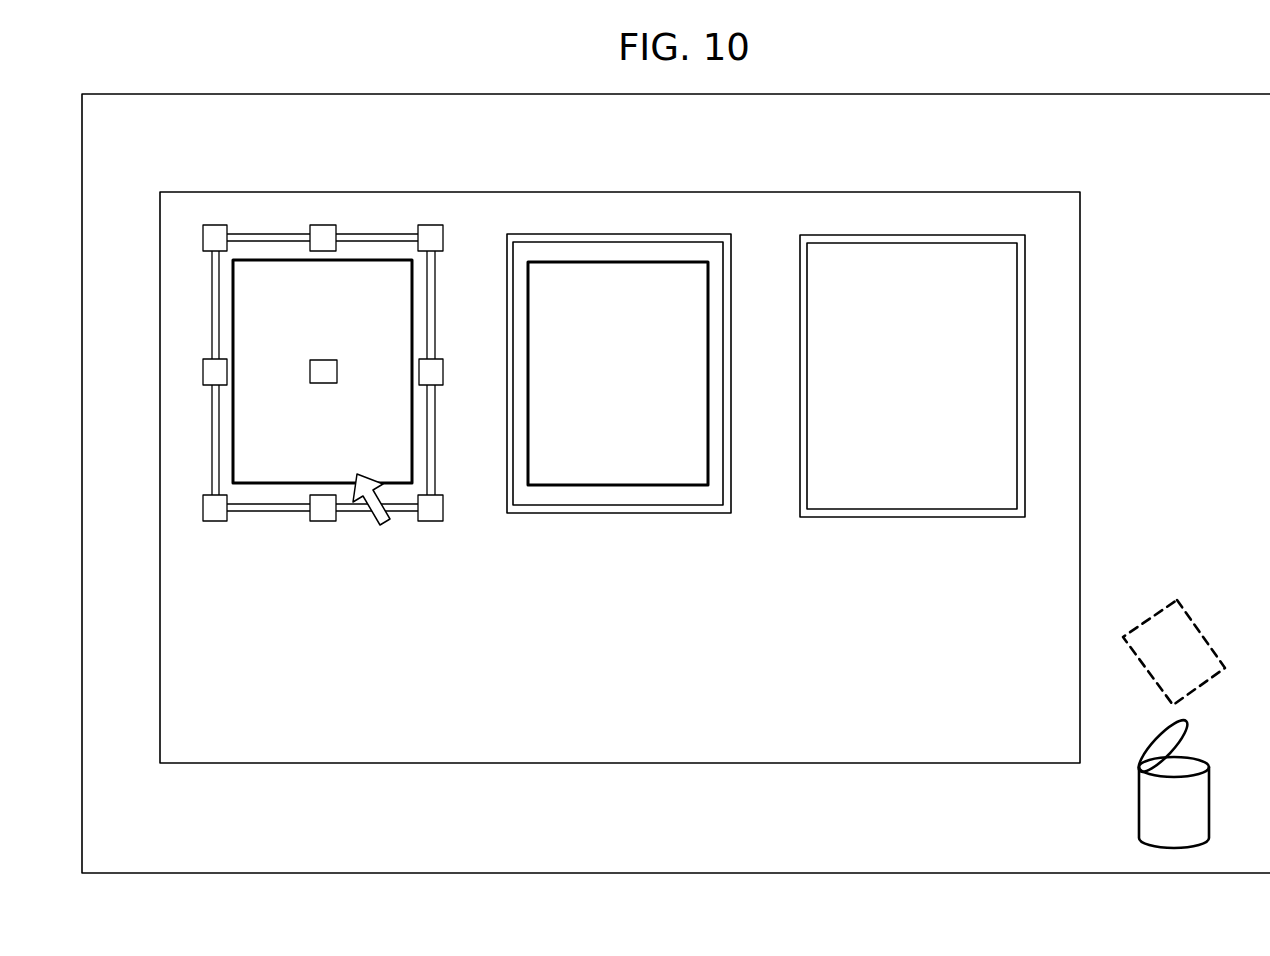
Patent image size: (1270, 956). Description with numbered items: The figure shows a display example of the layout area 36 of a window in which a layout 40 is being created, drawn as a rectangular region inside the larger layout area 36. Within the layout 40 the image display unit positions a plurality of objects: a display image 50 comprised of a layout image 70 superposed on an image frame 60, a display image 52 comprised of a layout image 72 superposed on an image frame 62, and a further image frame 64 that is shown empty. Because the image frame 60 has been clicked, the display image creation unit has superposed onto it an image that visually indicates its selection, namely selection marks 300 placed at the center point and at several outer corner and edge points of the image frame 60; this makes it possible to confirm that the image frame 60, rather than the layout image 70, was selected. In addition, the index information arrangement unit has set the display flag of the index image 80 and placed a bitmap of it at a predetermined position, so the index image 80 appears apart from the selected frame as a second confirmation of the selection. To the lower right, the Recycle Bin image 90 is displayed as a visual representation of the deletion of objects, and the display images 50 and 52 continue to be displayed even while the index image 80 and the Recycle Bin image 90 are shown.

The layout area 36 is at (156, 93).
The layout 40 is at (158, 235).
The display image 50 is at (380, 143).
The image frame 60 is at (286, 252).
The layout image 70 is at (362, 276).
The display image 52 is at (678, 145).
The image frame 62 is at (610, 256).
The layout image 72 is at (657, 278).
The image frame 64 is at (903, 256).
The selection marks 300 is at (203, 238).
The index image 80 is at (1186, 612).
The Recycle Bin image 90 is at (1210, 792).